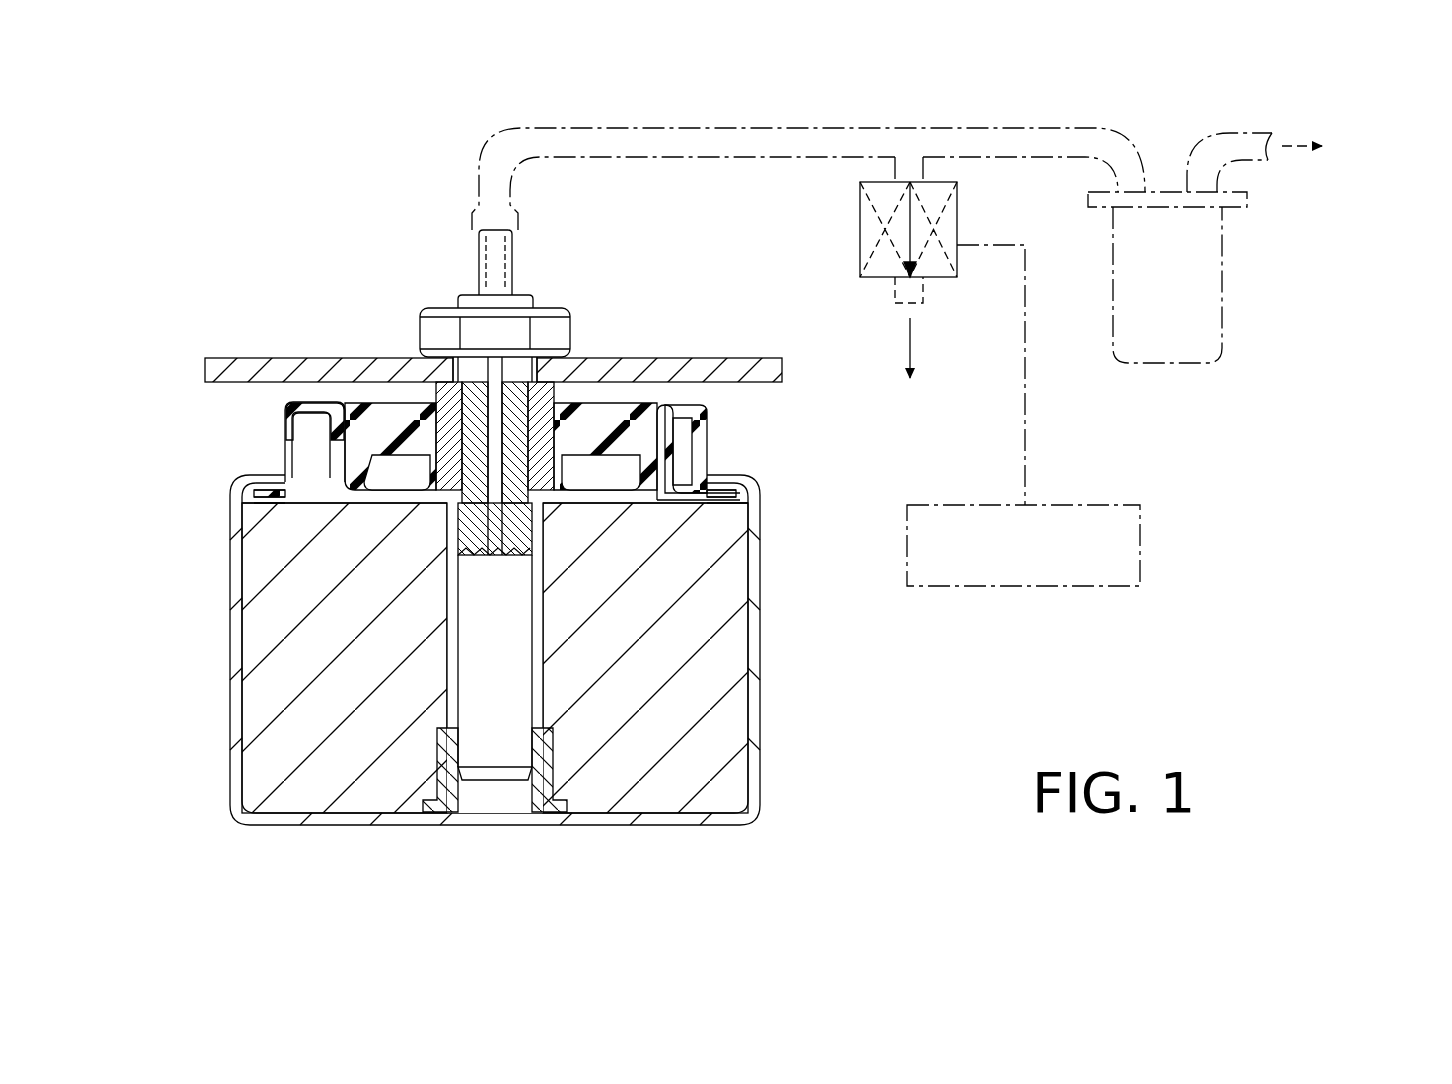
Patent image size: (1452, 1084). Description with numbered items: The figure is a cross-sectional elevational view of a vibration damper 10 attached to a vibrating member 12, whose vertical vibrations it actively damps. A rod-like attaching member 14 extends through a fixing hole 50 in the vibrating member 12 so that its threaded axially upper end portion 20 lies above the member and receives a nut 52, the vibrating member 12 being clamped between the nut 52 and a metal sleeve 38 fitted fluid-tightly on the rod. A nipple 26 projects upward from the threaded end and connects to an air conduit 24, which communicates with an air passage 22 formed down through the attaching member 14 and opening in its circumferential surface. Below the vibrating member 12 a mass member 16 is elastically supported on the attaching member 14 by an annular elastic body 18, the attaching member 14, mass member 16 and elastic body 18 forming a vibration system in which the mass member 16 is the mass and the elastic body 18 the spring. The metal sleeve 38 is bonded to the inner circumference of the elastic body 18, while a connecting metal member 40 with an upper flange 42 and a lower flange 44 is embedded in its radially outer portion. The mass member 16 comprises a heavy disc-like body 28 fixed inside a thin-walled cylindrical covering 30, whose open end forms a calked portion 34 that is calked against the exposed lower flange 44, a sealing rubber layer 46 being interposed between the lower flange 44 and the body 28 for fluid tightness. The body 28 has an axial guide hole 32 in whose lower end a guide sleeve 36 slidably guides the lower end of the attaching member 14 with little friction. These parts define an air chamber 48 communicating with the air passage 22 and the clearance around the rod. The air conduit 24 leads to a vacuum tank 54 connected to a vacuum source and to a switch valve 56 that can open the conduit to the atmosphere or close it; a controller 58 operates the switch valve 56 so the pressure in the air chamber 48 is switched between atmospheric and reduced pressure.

The vibration damper 10 is at (227, 463).
The vibrating member 12 is at (243, 368).
The attaching member 14 is at (548, 610).
The mass member 16 is at (212, 588).
The elastic body 18 is at (622, 487).
The threaded axially upper end portion 20 is at (518, 297).
The air passage 22 is at (395, 420).
The air conduit 24 is at (793, 118).
The nipple 26 is at (477, 266).
The body 28 is at (272, 612).
The cylindrical covering 30 is at (752, 712).
The guide hole 32 is at (452, 680).
The calked portion 34 is at (737, 475).
The guide sleeve 36 is at (545, 753).
The metal sleeve 38 is at (548, 392).
The connecting metal member 40 is at (325, 463).
The upper flange 42 is at (302, 417).
The lower flange 44 is at (243, 510).
The sealing rubber layer 46 is at (672, 503).
The air chamber 48 is at (628, 480).
The fixing hole 50 is at (470, 362).
The nut 52 is at (555, 323).
The vacuum tank 54 is at (1177, 353).
The switch valve 56 is at (955, 232).
The controller 58 is at (1133, 555).